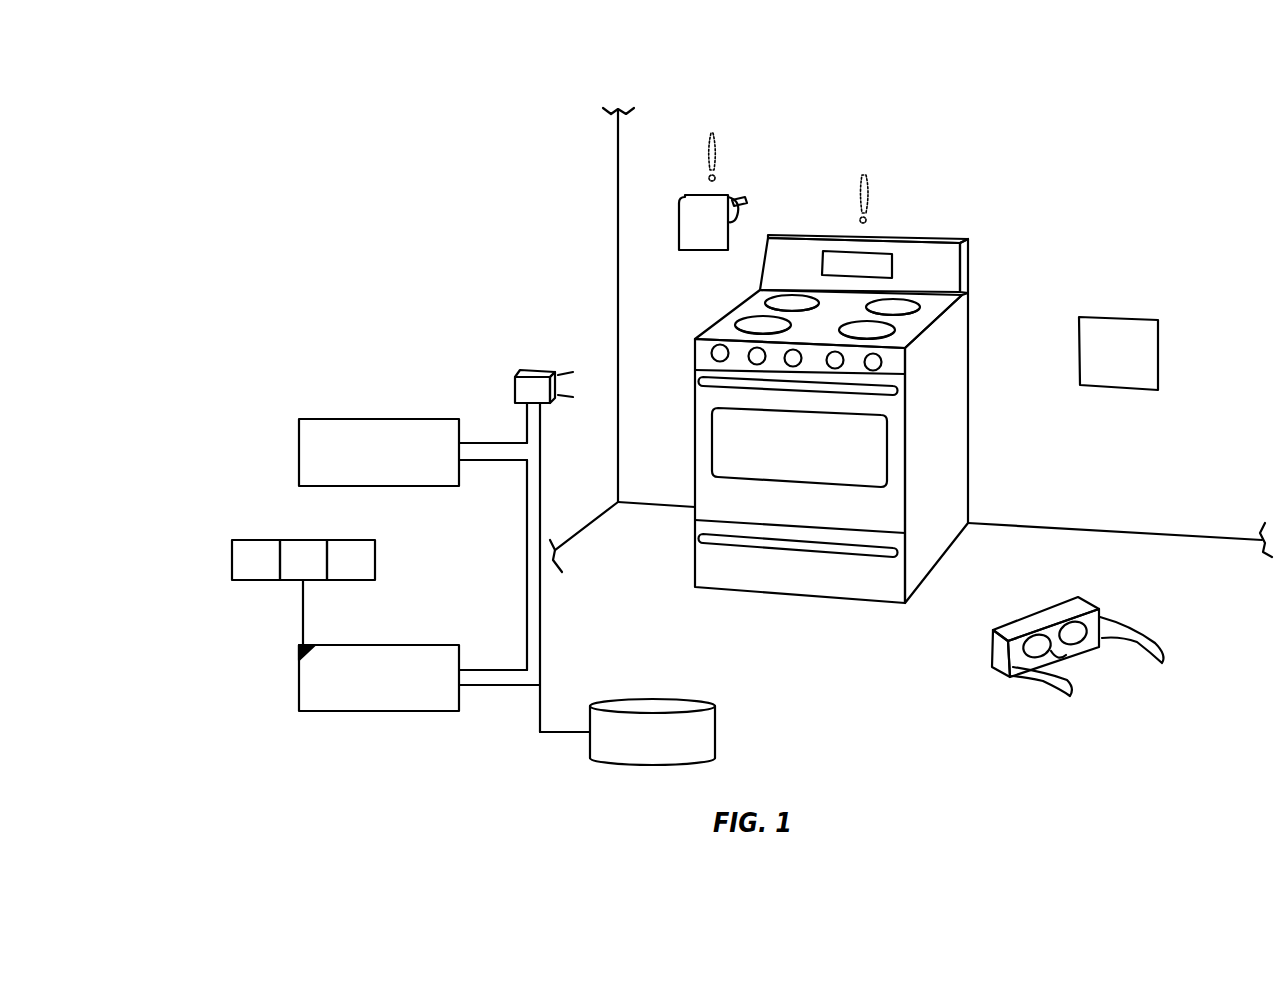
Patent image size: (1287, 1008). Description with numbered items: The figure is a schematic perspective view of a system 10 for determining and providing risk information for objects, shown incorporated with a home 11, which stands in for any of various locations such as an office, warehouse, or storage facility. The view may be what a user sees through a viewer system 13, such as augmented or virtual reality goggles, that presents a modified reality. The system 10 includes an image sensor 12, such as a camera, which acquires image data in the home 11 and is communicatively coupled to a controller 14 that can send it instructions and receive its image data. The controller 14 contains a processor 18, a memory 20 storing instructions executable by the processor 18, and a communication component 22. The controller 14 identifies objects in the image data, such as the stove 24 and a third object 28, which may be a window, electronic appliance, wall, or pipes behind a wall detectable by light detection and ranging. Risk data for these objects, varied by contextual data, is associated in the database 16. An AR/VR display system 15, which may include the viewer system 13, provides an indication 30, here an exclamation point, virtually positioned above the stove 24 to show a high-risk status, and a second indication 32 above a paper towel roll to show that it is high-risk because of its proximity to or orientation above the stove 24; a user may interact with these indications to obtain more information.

The system 10 is at (387, 290).
The home 11 is at (970, 118).
The image sensor 12 is at (514, 380).
The viewer system 13 is at (1088, 602).
The controller 14 is at (378, 645).
The AR/VR display system 15 is at (378, 418).
The database 16 is at (653, 700).
The processor 18 is at (250, 540).
The memory 20 is at (305, 540).
The communication component 22 is at (360, 540).
The stove 24 is at (913, 237).
The third object 28 is at (1120, 317).
The indication 30 is at (866, 174).
The indication 32 is at (713, 133).